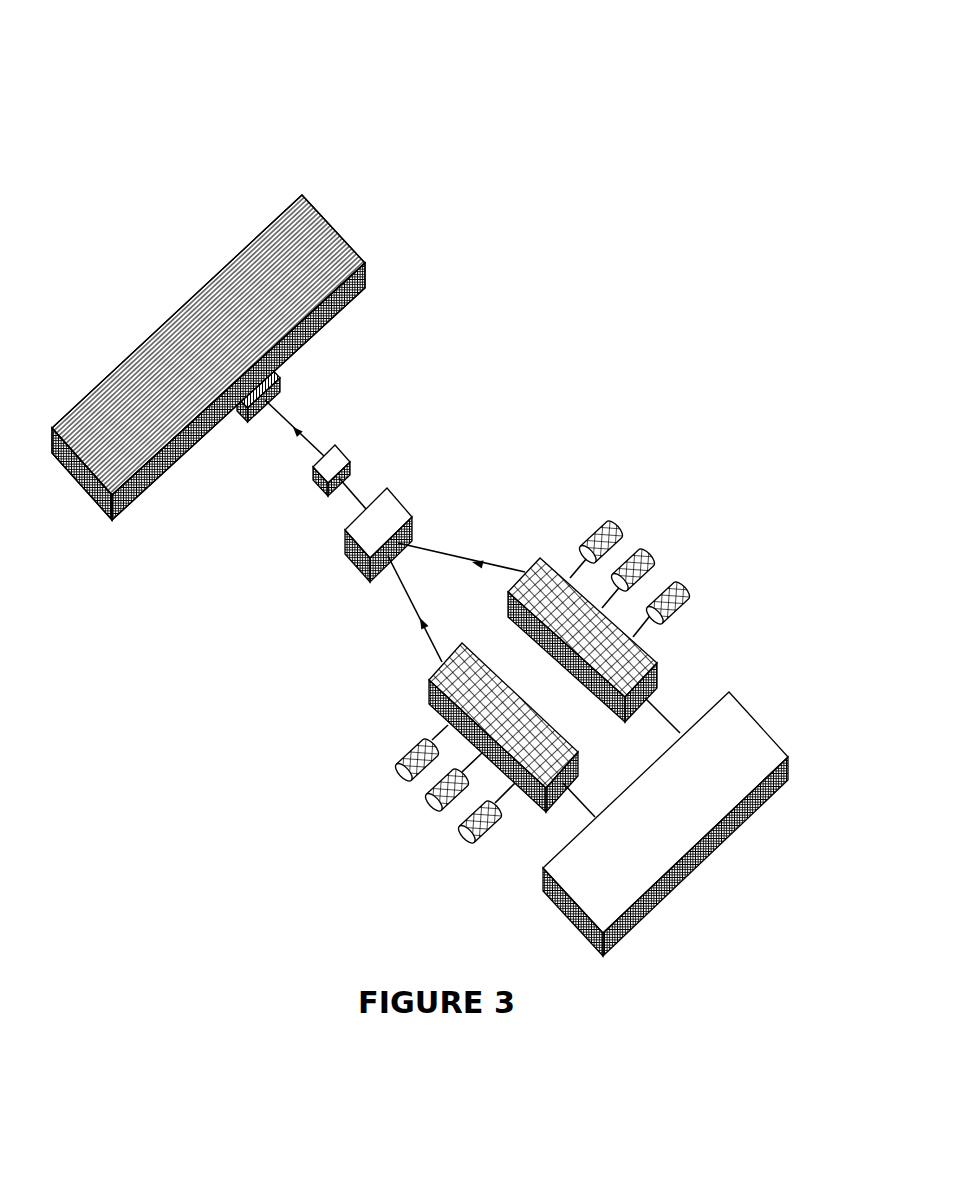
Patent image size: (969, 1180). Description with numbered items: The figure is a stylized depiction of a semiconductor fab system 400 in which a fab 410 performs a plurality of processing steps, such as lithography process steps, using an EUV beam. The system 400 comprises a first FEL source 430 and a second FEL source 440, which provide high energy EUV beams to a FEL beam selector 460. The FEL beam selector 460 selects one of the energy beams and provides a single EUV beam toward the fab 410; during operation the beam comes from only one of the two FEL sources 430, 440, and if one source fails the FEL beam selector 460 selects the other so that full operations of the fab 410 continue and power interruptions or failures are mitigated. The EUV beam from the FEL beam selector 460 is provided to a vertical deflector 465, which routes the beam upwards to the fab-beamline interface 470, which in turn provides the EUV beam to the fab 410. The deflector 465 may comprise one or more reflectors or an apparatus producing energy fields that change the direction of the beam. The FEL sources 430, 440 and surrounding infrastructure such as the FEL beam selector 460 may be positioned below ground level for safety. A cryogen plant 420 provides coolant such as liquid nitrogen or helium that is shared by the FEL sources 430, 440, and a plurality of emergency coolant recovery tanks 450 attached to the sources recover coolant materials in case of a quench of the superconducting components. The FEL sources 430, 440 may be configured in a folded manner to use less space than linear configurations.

The fab system 400 is at (210, 44).
The fab 410 is at (310, 342).
The cryogen plant 420 is at (770, 730).
The first FEL source 430 is at (540, 560).
The second FEL source 440 is at (432, 667).
The coolant recovery tanks 450 is at (355, 730).
The FEL beam selector 460 is at (387, 488).
The vertical deflector 465 is at (328, 495).
The fab-beamline interface 470 is at (247, 423).